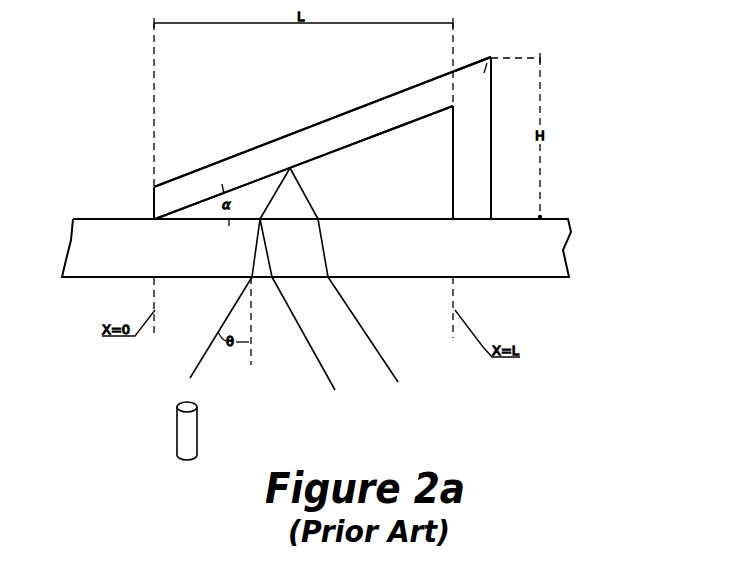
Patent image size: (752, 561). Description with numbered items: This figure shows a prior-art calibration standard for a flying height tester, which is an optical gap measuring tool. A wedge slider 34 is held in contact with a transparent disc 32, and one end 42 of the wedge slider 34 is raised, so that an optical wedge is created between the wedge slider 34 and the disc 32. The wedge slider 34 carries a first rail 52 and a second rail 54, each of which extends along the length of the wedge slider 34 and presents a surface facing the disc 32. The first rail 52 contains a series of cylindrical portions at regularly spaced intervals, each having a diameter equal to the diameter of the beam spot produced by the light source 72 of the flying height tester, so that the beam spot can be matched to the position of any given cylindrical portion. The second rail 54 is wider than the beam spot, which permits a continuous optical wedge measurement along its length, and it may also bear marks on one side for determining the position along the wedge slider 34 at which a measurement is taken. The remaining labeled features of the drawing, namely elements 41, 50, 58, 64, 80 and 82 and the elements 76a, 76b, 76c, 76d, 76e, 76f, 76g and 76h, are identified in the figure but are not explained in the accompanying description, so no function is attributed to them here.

The transparent disc 32 is at (342, 207).
The top surface of plate 82 is at (320, 198).
The bottom surface of plate 80 is at (331, 308).
The first rail 52 is at (322, 138).
The second rail 54 is at (322, 122).
The reflective lower surface 58 is at (304, 162).
The air gap 64 is at (386, 145).
The reflector pivot end 41 is at (114, 173).
The support post 50 is at (492, 161).
The wedge slider 34 is at (490, 85).
The one end of the wedge slider 42 is at (490, 58).
The light source 72 is at (169, 443).
The incident light ray 76a is at (194, 331).
The refracted ray in plate 76b is at (233, 248).
The internally reflected ray 76c is at (289, 248).
The exiting reflected ray 76d is at (303, 335).
The transmitted ray to reflector 76e is at (253, 173).
The ray reflected from reflector 76f is at (321, 193).
The ray re-entering plate 76g is at (351, 248).
The output ray 76h is at (369, 329).